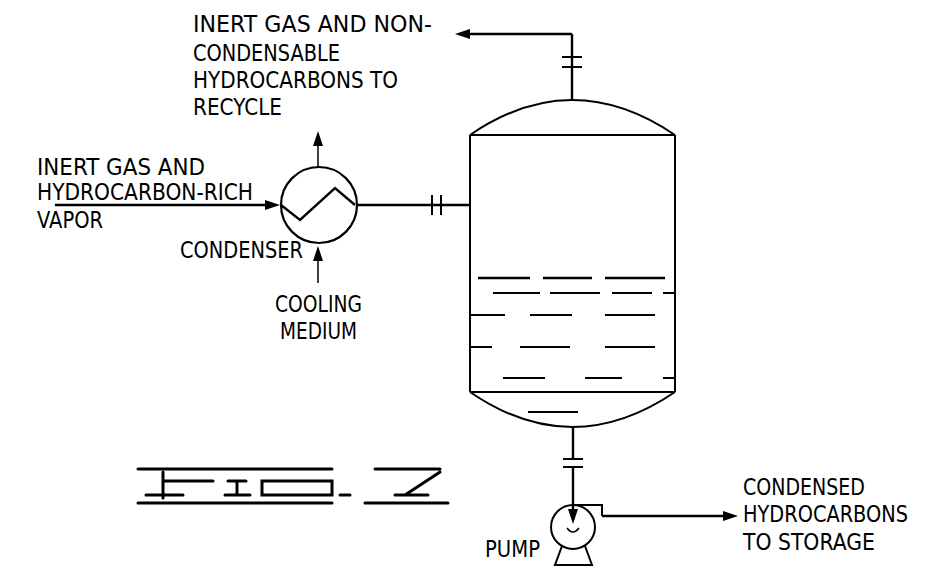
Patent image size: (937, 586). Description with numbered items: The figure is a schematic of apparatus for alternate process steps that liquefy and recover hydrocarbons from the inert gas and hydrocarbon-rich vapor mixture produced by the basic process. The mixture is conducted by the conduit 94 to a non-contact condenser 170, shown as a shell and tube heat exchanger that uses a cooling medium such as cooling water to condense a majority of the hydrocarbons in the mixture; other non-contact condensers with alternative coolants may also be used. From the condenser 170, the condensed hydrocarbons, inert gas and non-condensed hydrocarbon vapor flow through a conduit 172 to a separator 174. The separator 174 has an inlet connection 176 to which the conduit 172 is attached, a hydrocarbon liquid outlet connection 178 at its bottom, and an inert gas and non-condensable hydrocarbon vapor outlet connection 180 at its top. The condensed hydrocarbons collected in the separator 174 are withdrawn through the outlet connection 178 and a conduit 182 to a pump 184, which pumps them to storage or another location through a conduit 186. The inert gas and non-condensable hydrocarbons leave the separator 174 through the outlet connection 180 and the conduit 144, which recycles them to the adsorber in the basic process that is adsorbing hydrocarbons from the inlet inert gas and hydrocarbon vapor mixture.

The conduit 94 is at (190, 206).
The non-contact condenser 170 is at (335, 167).
The conduit 172 is at (397, 203).
The inlet connection 176 is at (455, 208).
The separator 174 is at (675, 205).
The inert gas and non-condensable hydrocarbon vapor outlet connection 180 is at (575, 82).
The conduit 144 is at (533, 35).
The hydrocarbon liquid outlet connection 178 is at (578, 443).
The conduit 182 is at (575, 488).
The pump 184 is at (585, 527).
The conduit 186 is at (697, 515).